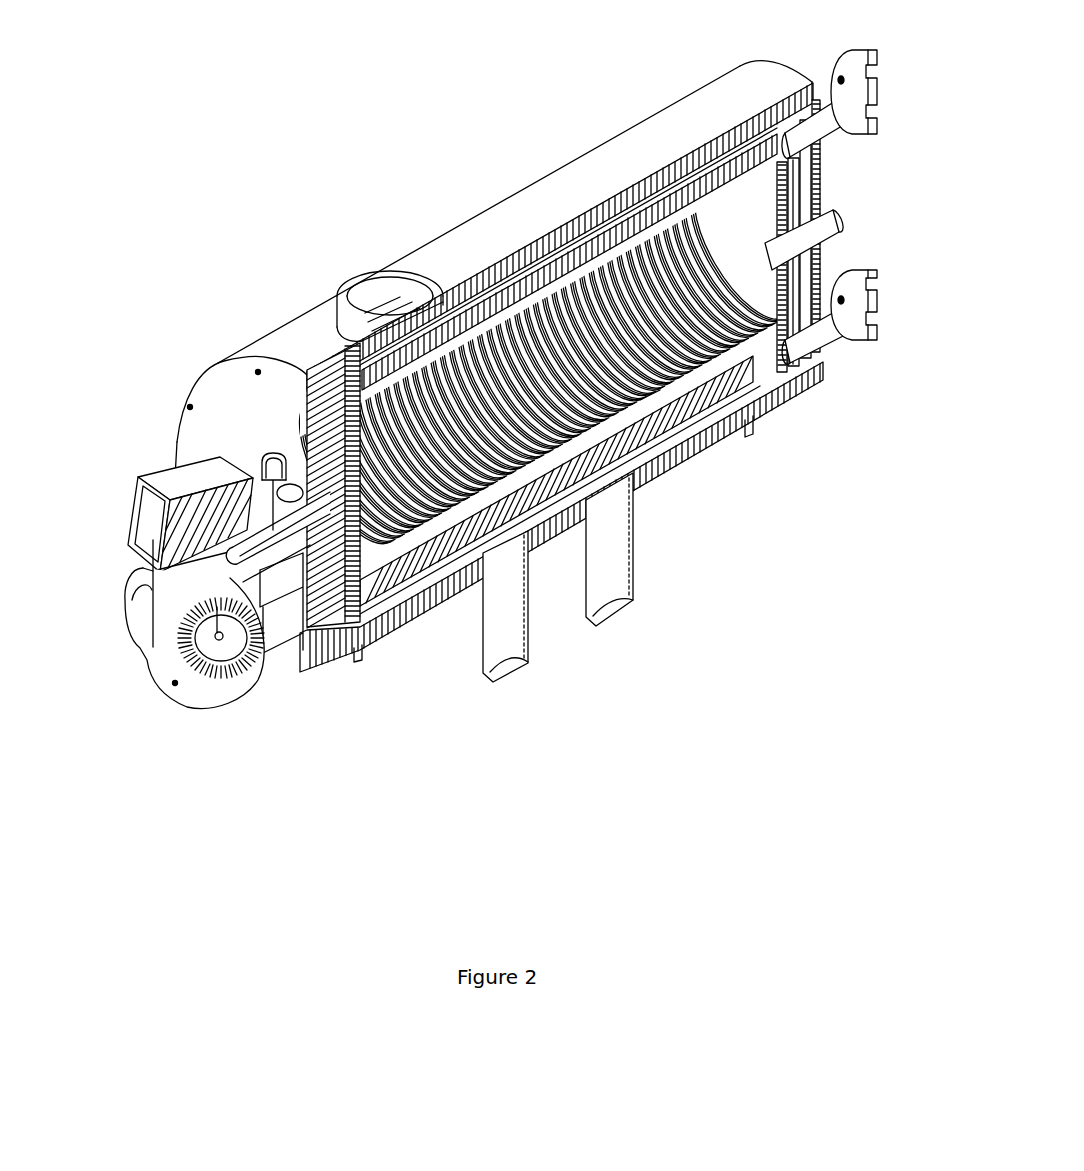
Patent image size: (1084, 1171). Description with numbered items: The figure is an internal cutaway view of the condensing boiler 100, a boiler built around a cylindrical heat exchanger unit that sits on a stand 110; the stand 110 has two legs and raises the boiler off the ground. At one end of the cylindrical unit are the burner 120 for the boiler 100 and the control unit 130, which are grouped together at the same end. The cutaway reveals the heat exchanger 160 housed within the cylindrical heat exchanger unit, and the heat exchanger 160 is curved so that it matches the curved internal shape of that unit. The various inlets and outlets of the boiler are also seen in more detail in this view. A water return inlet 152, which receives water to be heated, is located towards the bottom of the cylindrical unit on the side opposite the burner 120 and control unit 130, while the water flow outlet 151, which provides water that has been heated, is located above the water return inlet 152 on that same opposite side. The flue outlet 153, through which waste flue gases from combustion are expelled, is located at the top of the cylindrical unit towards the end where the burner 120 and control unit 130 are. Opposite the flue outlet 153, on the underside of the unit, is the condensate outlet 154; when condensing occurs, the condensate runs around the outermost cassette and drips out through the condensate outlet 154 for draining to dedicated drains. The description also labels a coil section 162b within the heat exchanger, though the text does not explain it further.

The condensing boiler 100 is at (549, 112).
The stand 110 is at (625, 567).
The burner 120 is at (157, 663).
The control unit 130 is at (147, 529).
The water flow outlet 151 is at (830, 121).
The water return inlet 152 is at (830, 347).
The flue outlet 153 is at (363, 290).
The condensate outlet 154 is at (368, 658).
The heat exchanger 160 is at (700, 368).
The coil tube section 162b is at (655, 395).